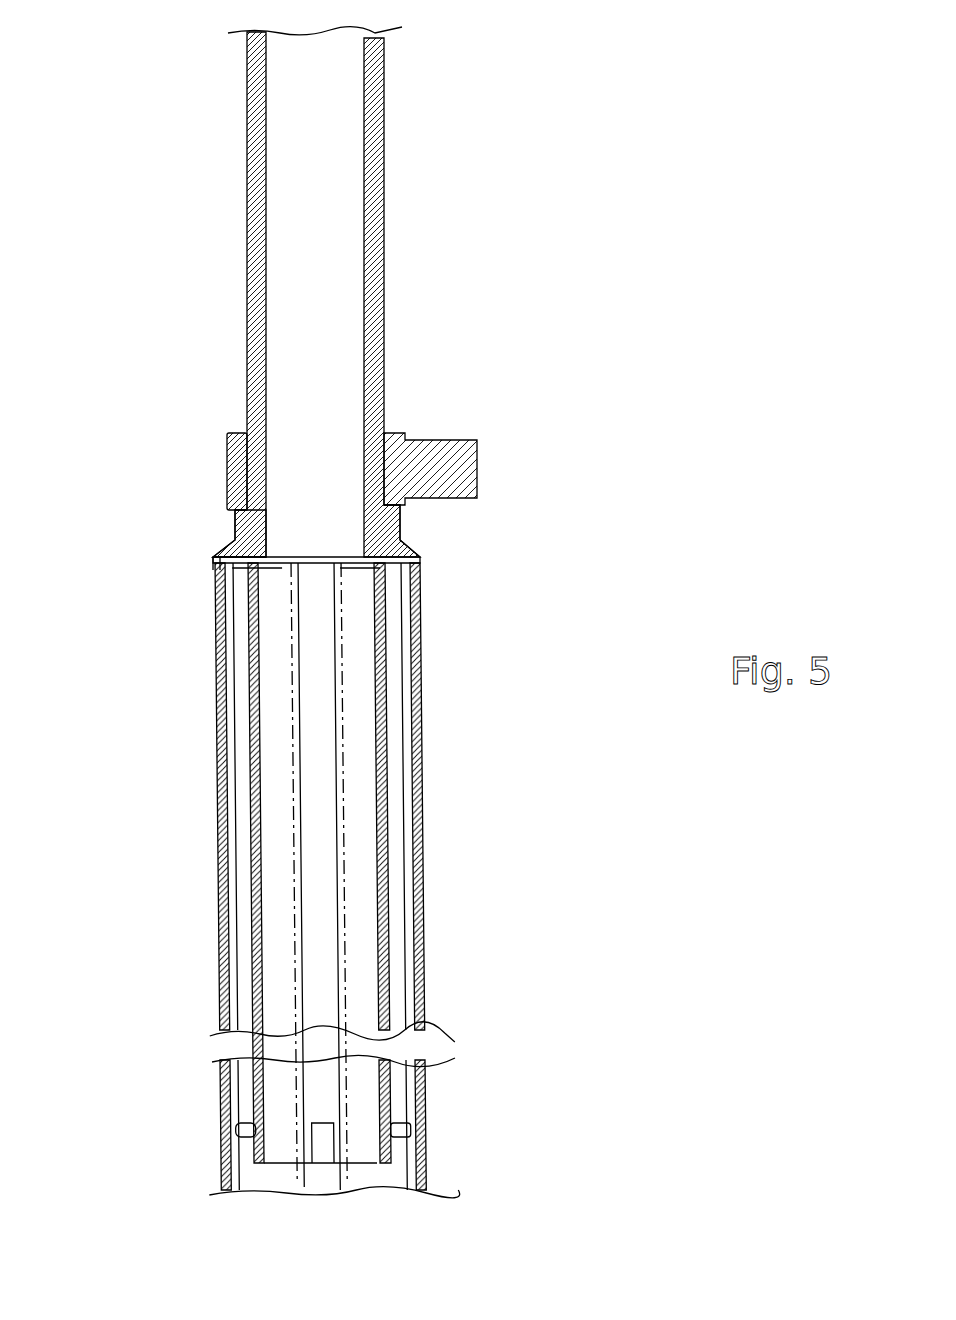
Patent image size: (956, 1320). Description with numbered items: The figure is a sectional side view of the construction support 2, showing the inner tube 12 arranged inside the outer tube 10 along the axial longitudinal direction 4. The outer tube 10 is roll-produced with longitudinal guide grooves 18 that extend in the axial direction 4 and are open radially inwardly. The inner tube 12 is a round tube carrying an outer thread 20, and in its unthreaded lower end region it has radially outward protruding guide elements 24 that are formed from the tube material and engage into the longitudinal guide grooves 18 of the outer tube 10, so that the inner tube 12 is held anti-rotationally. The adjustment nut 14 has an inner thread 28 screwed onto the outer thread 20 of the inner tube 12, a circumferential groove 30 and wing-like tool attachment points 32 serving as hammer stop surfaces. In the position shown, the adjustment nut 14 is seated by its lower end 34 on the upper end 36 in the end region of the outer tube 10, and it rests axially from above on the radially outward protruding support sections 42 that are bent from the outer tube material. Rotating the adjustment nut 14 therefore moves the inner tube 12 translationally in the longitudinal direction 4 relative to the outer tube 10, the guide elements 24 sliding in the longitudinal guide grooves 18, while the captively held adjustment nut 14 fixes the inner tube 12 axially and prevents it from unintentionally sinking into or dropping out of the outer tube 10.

The construction support 2 is at (495, 150).
The axial longitudinal direction 4 is at (112, 277).
The outer tube 10 is at (418, 790).
The inner tube 12 is at (385, 323).
The adjustment nut 14 is at (228, 486).
The longitudinal guide grooves 18 is at (327, 973).
The outer thread 20 is at (247, 332).
The guide elements 24 is at (397, 1135).
The inner thread 28 is at (268, 433).
The circumferential groove 30 is at (400, 517).
The tool attachment points 32 is at (477, 470).
The lower end 34 is at (416, 558).
The upper end 36 is at (217, 558).
The support sections 42 is at (253, 567).